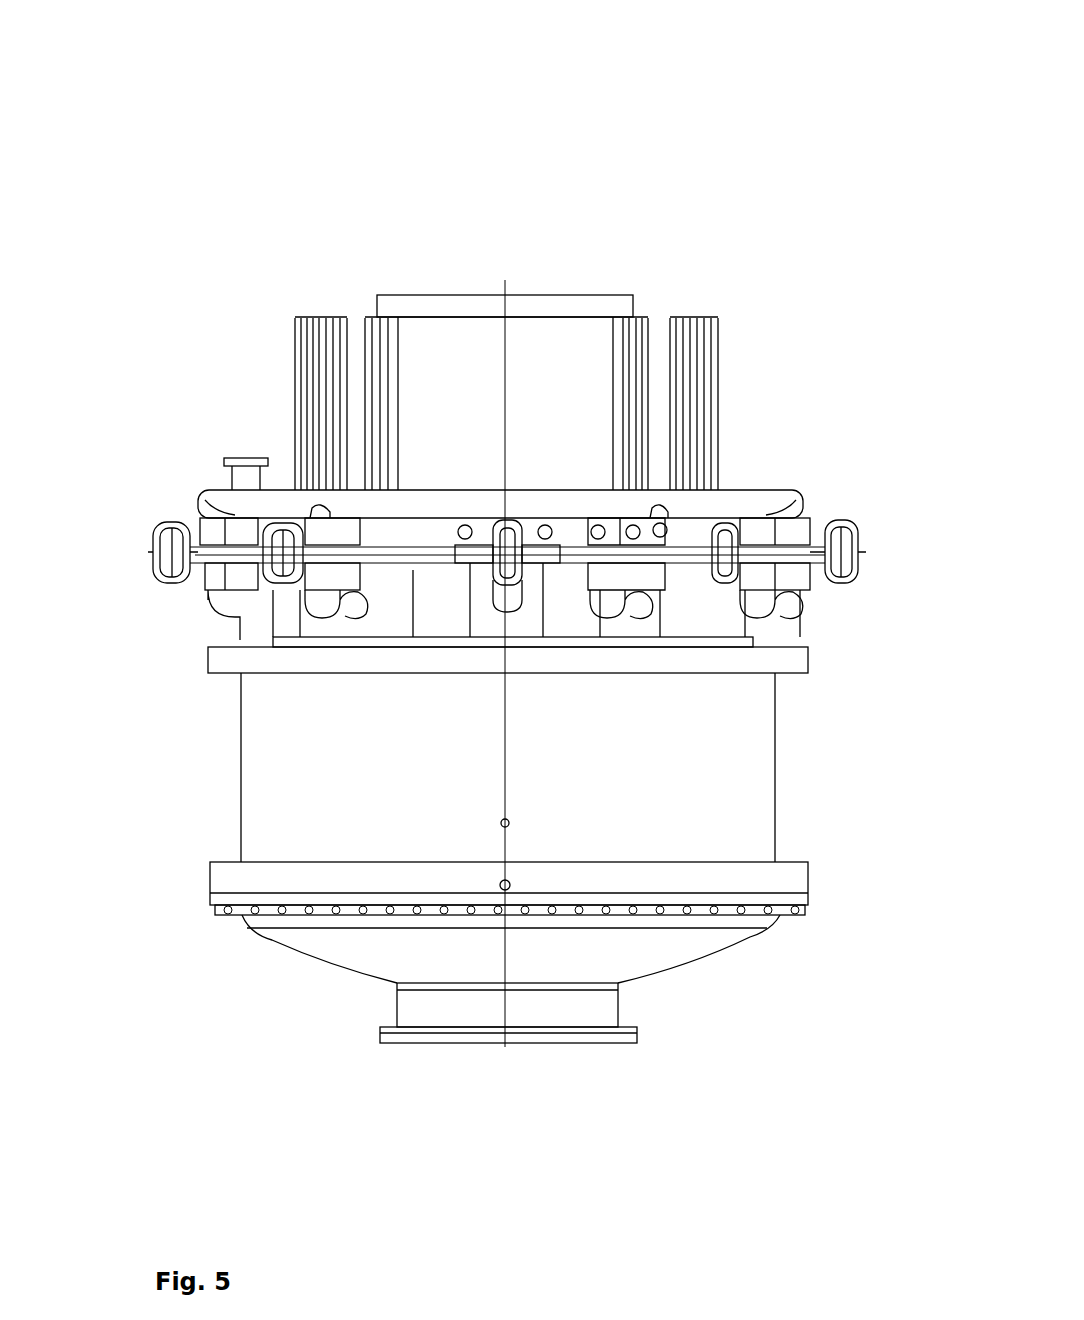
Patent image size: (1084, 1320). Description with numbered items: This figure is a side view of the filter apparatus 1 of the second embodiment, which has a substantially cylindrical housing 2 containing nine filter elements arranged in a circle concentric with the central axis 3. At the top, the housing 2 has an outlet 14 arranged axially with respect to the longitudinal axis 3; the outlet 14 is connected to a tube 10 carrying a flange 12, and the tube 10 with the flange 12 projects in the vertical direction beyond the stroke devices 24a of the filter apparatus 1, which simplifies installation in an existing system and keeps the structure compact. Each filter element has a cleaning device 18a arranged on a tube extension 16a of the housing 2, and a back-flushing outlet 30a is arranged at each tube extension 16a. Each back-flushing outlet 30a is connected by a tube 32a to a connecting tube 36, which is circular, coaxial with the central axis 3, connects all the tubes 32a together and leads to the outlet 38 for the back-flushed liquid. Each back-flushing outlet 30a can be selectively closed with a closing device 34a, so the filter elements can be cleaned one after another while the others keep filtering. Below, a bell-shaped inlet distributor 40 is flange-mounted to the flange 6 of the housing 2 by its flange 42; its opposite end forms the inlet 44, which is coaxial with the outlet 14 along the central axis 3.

The filter apparatus 1 is at (170, 92).
The housing 2 is at (742, 797).
The central axis 3 is at (498, 950).
The flange 6 is at (797, 870).
The tube 10 is at (565, 355).
The flange 12 is at (448, 293).
The outlet 14 is at (488, 275).
The tube extension 16a is at (313, 620).
The cleaning device 18a is at (285, 420).
The stroke device 24a is at (303, 300).
The back-flushing outlet 30a is at (282, 603).
The tube 32a is at (232, 598).
The closing device 34a is at (165, 588).
The connecting tube 36 is at (748, 490).
The outlet 38 is at (243, 448).
The inlet distributor 40 is at (668, 975).
The flange 42 is at (782, 912).
The inlet 44 is at (572, 1050).